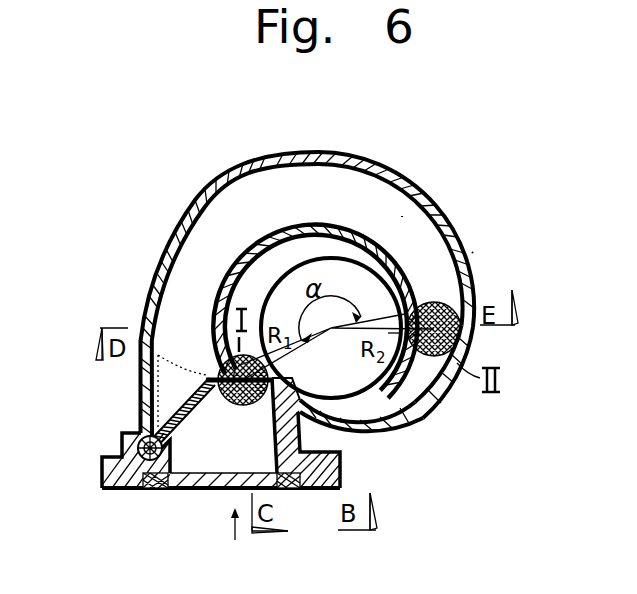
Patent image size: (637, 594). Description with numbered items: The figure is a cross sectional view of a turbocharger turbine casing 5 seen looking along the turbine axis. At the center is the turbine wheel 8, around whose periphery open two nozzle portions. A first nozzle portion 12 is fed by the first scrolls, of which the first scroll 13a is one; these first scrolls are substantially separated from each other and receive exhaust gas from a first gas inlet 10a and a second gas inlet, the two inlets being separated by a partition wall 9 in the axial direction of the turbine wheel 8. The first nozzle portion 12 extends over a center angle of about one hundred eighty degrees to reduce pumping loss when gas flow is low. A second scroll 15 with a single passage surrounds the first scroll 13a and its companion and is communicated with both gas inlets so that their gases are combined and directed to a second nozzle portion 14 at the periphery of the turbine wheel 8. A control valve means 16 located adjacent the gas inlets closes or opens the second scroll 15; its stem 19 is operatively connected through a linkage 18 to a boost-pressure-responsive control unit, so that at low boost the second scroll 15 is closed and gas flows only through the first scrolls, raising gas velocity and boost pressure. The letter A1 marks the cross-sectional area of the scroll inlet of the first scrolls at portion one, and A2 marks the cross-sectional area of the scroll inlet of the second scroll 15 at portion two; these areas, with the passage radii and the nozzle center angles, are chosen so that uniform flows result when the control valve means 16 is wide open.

The turbine casing 5 is at (478, 250).
The turbine wheel 8 is at (342, 380).
The partition wall 9 is at (180, 490).
The first gas inlet 10a is at (223, 463).
The first nozzle portion 12 is at (336, 264).
The first scroll 13a is at (402, 216).
The second nozzle portion 14 is at (413, 408).
The second scroll 15 is at (200, 252).
The control valve means 16 is at (185, 411).
The linkage 18 is at (137, 447).
The stem 19 is at (143, 480).
The cross-sectional area of the scroll inlet at portion I A1 is at (231, 406).
The cross-sectional area of the scroll inlet at portion II A2 is at (437, 305).